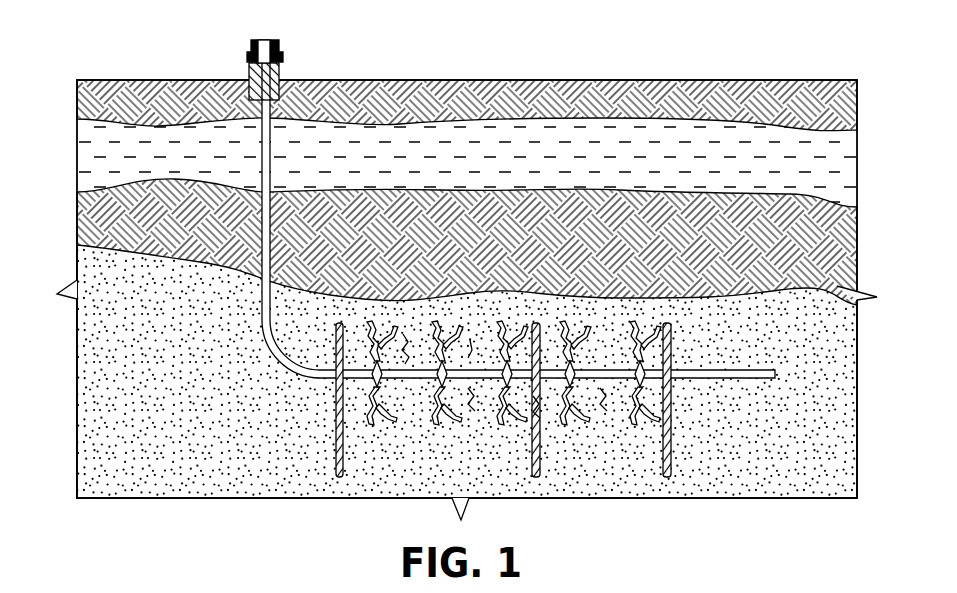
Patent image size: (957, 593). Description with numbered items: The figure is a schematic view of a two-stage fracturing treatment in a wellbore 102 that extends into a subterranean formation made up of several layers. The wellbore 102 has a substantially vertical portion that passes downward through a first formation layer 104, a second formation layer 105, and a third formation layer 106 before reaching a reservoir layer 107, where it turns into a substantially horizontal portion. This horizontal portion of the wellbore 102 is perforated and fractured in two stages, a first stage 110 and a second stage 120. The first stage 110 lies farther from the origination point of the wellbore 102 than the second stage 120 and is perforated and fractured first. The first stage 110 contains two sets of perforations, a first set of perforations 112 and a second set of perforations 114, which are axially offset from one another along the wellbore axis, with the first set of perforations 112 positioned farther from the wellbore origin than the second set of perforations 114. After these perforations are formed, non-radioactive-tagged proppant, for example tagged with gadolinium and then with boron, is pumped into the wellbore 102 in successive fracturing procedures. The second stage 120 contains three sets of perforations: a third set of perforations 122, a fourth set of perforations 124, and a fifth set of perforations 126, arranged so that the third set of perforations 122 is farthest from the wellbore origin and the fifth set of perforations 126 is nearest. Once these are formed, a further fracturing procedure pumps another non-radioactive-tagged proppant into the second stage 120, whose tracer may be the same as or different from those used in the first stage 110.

The wellbore 102 is at (263, 35).
The first formation layer 104 is at (82, 96).
The second formation layer 105 is at (88, 158).
The third formation layer 106 is at (88, 220).
The reservoir layer 107 is at (90, 420).
The first stage 110 is at (600, 482).
The first set of perforations 112 is at (655, 327).
The second set of perforations 114 is at (590, 327).
The second stage 120 is at (425, 480).
The third set of perforations 122 is at (522, 324).
The fourth set of perforations 124 is at (458, 328).
The fifth set of perforations 126 is at (392, 327).